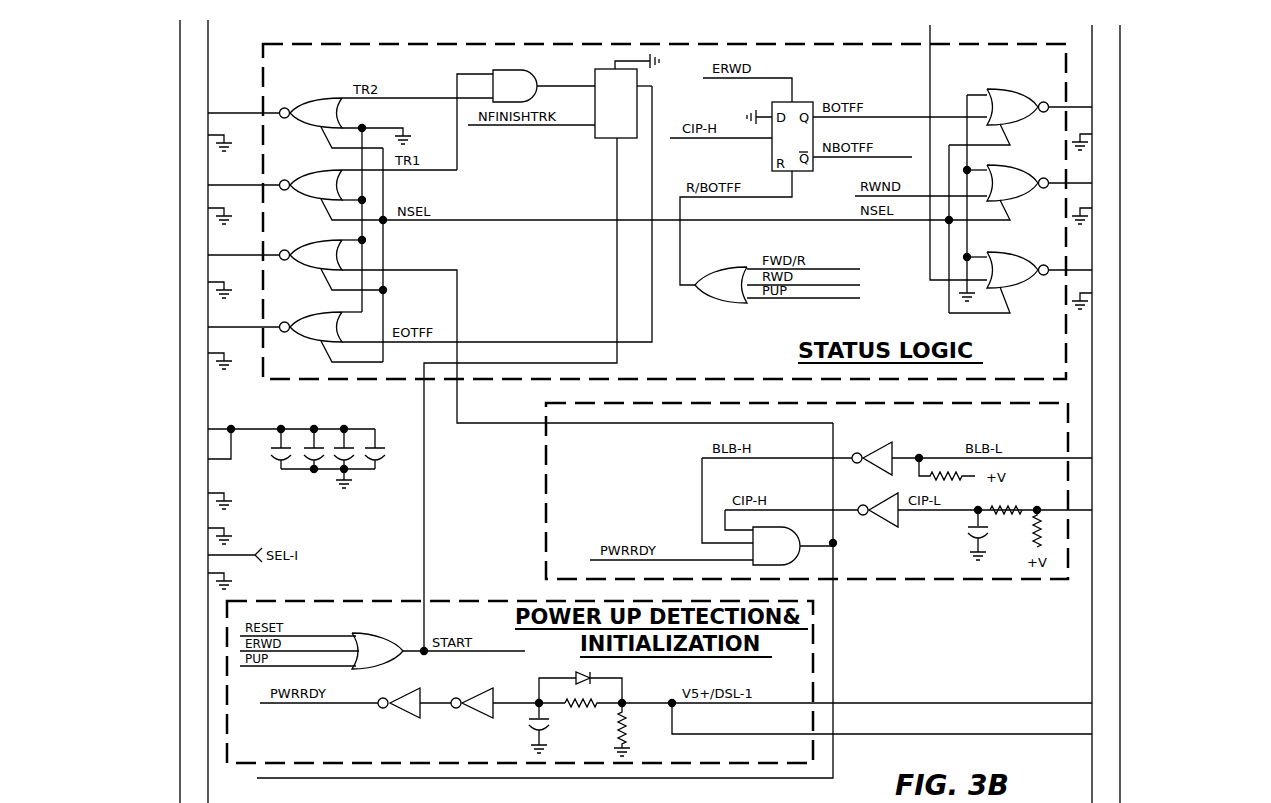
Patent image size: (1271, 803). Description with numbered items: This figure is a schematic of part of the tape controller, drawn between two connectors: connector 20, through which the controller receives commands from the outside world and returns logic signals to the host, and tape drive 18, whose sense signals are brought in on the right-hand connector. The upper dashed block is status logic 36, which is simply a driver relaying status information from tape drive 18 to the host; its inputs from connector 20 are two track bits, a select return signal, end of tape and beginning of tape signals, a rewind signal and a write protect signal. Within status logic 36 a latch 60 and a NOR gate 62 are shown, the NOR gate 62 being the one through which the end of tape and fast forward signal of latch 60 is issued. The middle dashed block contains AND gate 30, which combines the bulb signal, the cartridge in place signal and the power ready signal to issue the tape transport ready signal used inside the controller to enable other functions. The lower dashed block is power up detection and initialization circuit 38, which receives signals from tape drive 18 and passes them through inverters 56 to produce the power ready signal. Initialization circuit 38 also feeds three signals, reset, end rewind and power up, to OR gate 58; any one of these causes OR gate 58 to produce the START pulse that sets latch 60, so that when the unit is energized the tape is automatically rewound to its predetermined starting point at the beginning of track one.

The connector 20 is at (180, 56).
The tape drive 18 is at (1106, 61).
The status logic 36 is at (263, 52).
The AND gate 30 is at (546, 482).
The power up detection and initialization circuit 38 is at (378, 588).
The latch 60 is at (604, 140).
The NOR gate 62 is at (305, 306).
The OR gate 58 is at (373, 645).
The inverters 56 is at (476, 693).